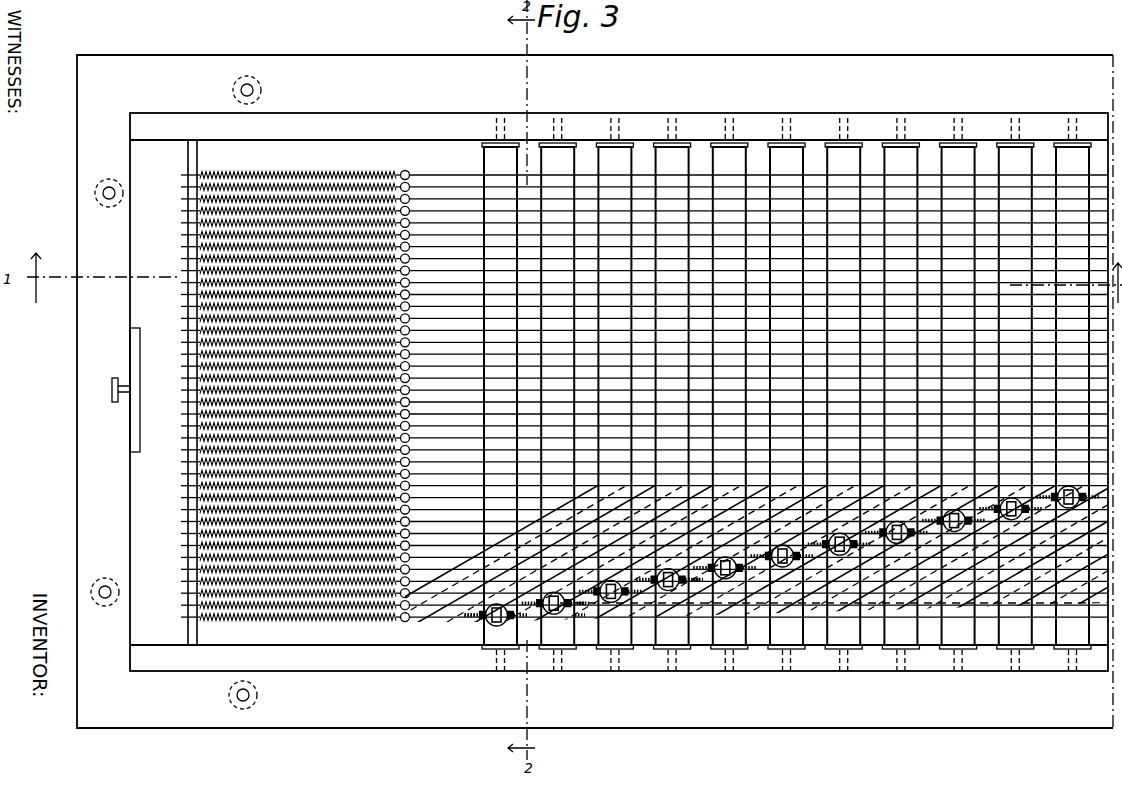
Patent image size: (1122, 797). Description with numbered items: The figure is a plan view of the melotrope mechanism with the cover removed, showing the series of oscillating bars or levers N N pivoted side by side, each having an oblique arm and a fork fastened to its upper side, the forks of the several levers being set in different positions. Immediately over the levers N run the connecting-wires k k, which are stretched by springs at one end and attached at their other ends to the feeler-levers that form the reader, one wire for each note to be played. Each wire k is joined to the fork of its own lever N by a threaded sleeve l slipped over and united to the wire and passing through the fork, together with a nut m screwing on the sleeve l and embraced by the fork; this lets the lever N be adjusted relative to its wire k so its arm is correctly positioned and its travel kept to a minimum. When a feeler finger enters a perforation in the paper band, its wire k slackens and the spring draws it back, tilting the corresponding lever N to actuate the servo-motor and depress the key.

The oscillating bar or lever N is at (786, 394).
The connecting-wire k is at (726, 476).
The threaded sleeve l is at (488, 615).
The nut m is at (473, 617).
The springs f is at (644, 396).